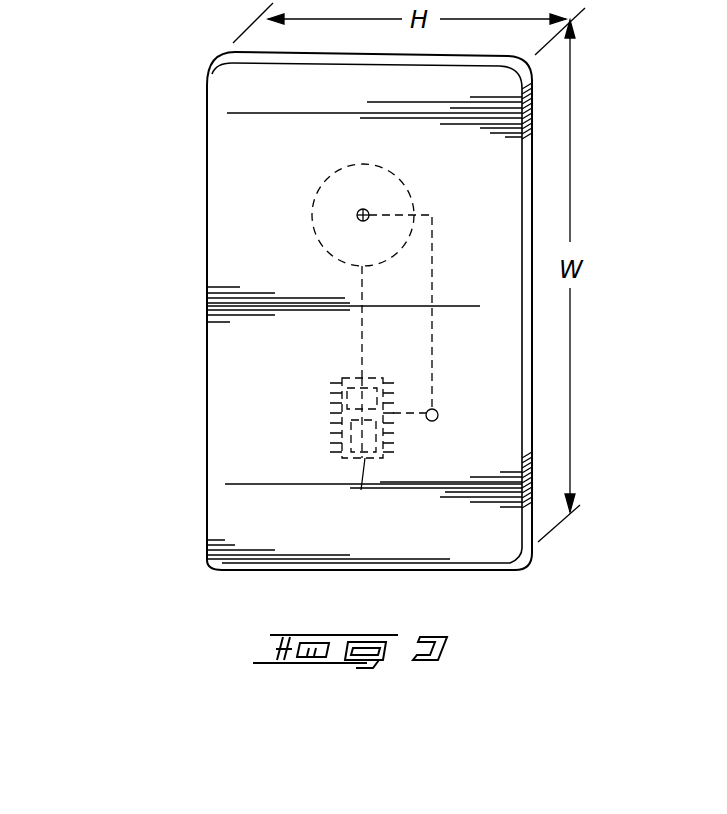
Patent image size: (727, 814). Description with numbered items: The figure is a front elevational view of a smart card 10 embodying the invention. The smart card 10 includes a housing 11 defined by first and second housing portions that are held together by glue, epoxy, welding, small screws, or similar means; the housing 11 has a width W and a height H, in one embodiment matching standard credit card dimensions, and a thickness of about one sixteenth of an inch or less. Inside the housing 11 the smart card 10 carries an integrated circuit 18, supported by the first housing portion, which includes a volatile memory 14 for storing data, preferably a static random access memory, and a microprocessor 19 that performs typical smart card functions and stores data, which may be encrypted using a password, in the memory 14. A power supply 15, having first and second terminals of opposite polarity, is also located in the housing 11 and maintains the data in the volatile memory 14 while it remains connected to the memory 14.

The smart card 10 is at (180, 439).
The housing 11 is at (240, 160).
The volatile memory 14 is at (355, 377).
The power supply 15 is at (408, 188).
The integrated circuit 18 is at (316, 420).
The microprocessor 19 is at (361, 493).